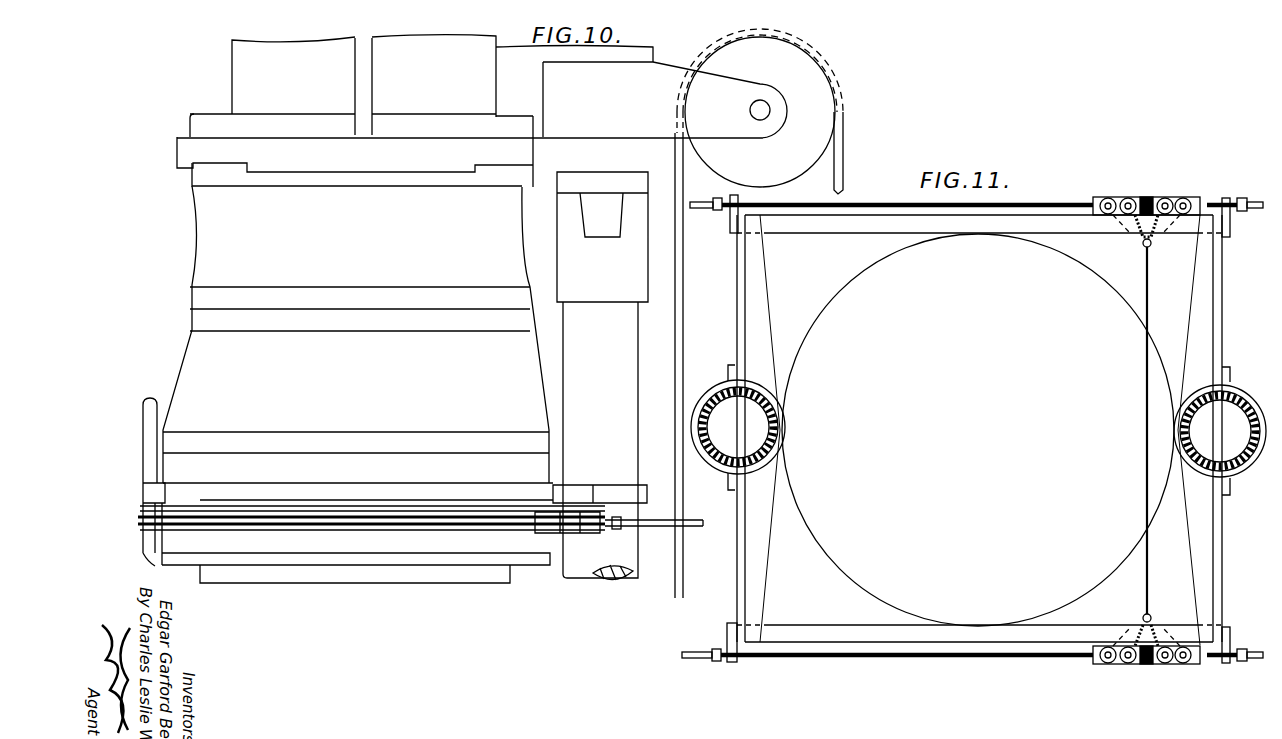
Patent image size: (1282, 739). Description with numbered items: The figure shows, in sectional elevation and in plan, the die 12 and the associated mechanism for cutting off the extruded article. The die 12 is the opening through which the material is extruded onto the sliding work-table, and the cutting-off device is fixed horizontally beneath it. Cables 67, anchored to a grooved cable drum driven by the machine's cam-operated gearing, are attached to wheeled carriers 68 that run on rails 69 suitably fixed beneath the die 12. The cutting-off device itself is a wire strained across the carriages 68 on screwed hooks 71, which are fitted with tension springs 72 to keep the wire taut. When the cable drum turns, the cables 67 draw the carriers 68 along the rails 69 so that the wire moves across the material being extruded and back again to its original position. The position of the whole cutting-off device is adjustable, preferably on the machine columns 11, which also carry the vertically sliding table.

In FIG. 10, the columns 11 is at (601, 557).
In FIG. 11, the columns 11 is at (720, 396).
In FIG. 10, the die 12 is at (350, 490).
In FIG. 10, the cables 67 is at (167, 517).
In FIG. 11, the cables 67 is at (705, 210).
In FIG. 10, the wheeled carriers 68 is at (535, 530).
In FIG. 11, the wheeled carriers 68 is at (1165, 199).
In FIG. 10, the rails 69 is at (440, 527).
In FIG. 11, the rails 69 is at (908, 223).
In FIG. 11, the screwed hooks 71 is at (1151, 245).
In FIG. 11, the tension springs 72 is at (1138, 225).